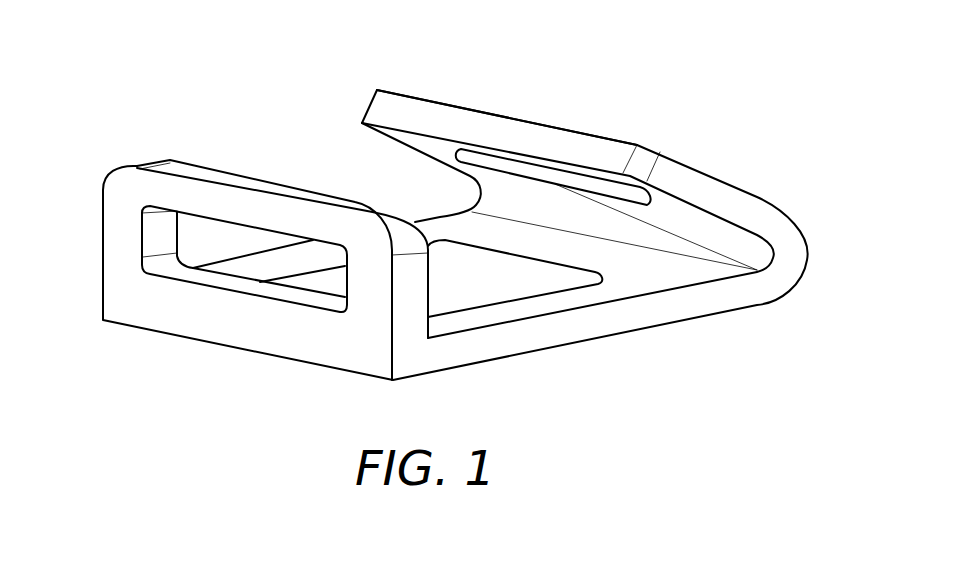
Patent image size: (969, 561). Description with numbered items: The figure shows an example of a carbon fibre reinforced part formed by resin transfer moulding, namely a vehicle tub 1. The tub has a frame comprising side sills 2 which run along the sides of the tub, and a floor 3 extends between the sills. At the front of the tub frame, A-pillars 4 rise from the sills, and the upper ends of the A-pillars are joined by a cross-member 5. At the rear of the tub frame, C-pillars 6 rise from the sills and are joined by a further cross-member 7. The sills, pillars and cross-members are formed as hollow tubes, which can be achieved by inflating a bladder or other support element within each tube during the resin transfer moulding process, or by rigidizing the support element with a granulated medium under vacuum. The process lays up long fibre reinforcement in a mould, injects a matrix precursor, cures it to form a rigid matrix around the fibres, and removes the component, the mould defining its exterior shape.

The vehicle tub 1 is at (695, 104).
The side sills 2 is at (433, 228).
The floor 3 is at (515, 283).
The A-pillars 4 is at (470, 168).
The cross-member 5 is at (585, 147).
The C-pillars 6 is at (117, 227).
The cross-member 7 is at (278, 208).